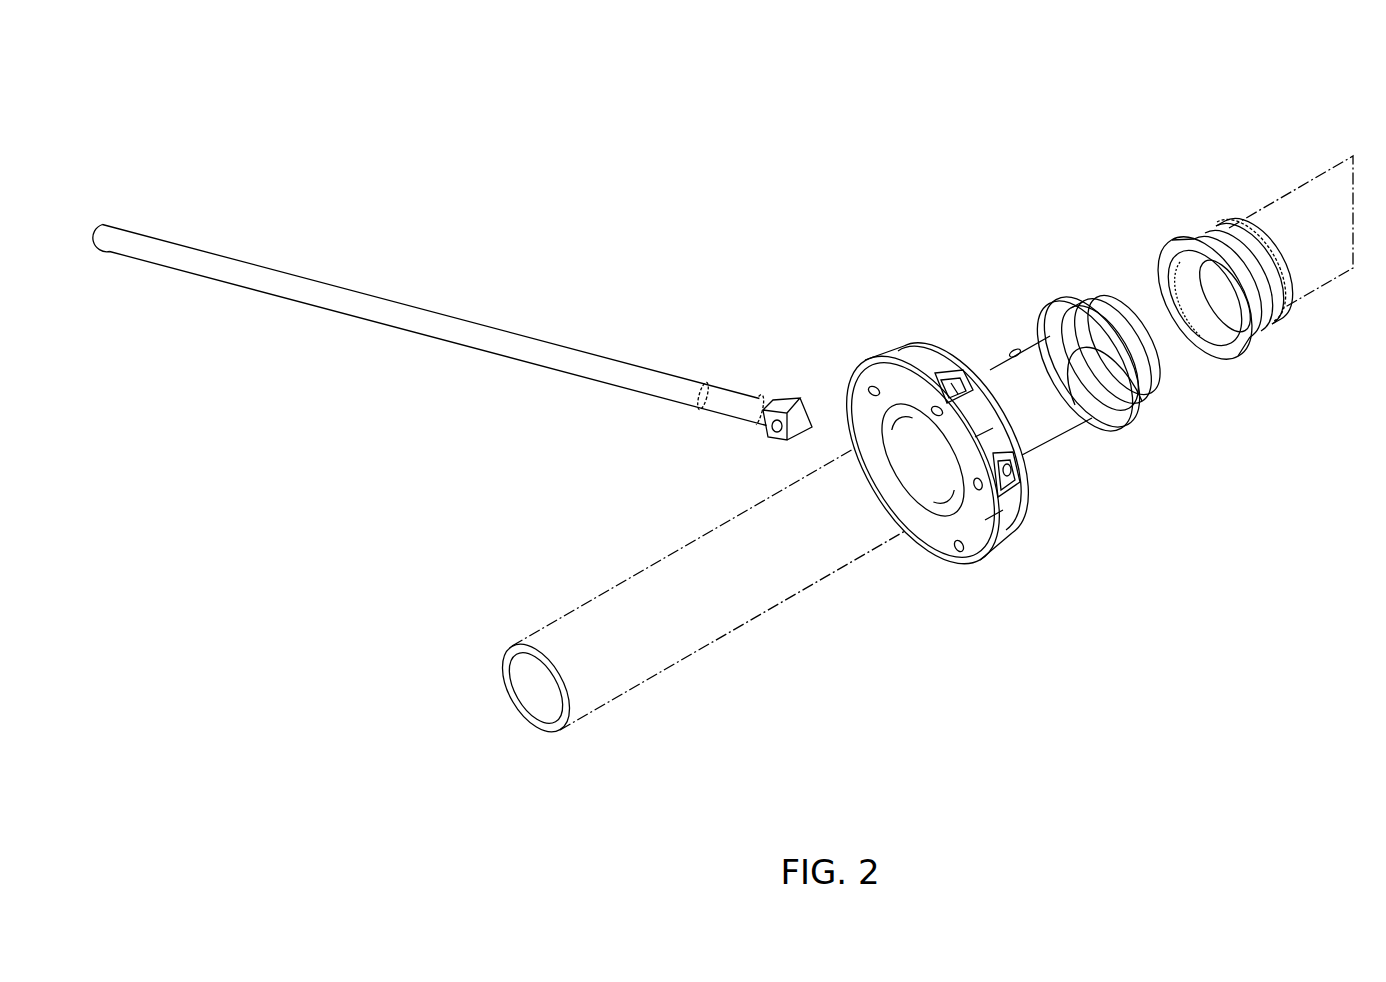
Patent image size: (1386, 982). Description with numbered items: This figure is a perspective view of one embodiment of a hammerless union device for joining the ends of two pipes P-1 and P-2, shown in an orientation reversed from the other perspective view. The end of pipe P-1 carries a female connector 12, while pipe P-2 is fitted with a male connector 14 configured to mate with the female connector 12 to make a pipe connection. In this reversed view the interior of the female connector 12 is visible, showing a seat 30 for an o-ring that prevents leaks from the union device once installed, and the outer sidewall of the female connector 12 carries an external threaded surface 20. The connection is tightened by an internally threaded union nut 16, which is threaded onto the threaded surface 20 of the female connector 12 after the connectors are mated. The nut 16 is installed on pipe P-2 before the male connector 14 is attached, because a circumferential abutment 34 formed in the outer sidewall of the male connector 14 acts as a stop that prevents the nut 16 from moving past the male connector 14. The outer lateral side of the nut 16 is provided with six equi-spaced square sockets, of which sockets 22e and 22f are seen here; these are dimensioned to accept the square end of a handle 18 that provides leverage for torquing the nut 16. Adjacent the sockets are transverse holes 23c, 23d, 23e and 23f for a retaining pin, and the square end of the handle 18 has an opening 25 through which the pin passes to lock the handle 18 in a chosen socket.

The handle 18 is at (346, 285).
The opening 25 is at (772, 428).
The pipe P-2 is at (665, 560).
The union nut 16 is at (918, 350).
The socket 22f is at (960, 375).
The socket 22e is at (1013, 488).
The hole 23c is at (868, 390).
The hole 23d is at (931, 408).
The hole 23e is at (978, 490).
The hole 23f is at (957, 550).
The male connector 14 is at (1143, 412).
The circumferential abutment 34 is at (1095, 300).
The female connector 12 is at (1183, 240).
The seat 30 is at (1183, 300).
The external threads 20 is at (1255, 300).
The pipe P-1 is at (1307, 188).